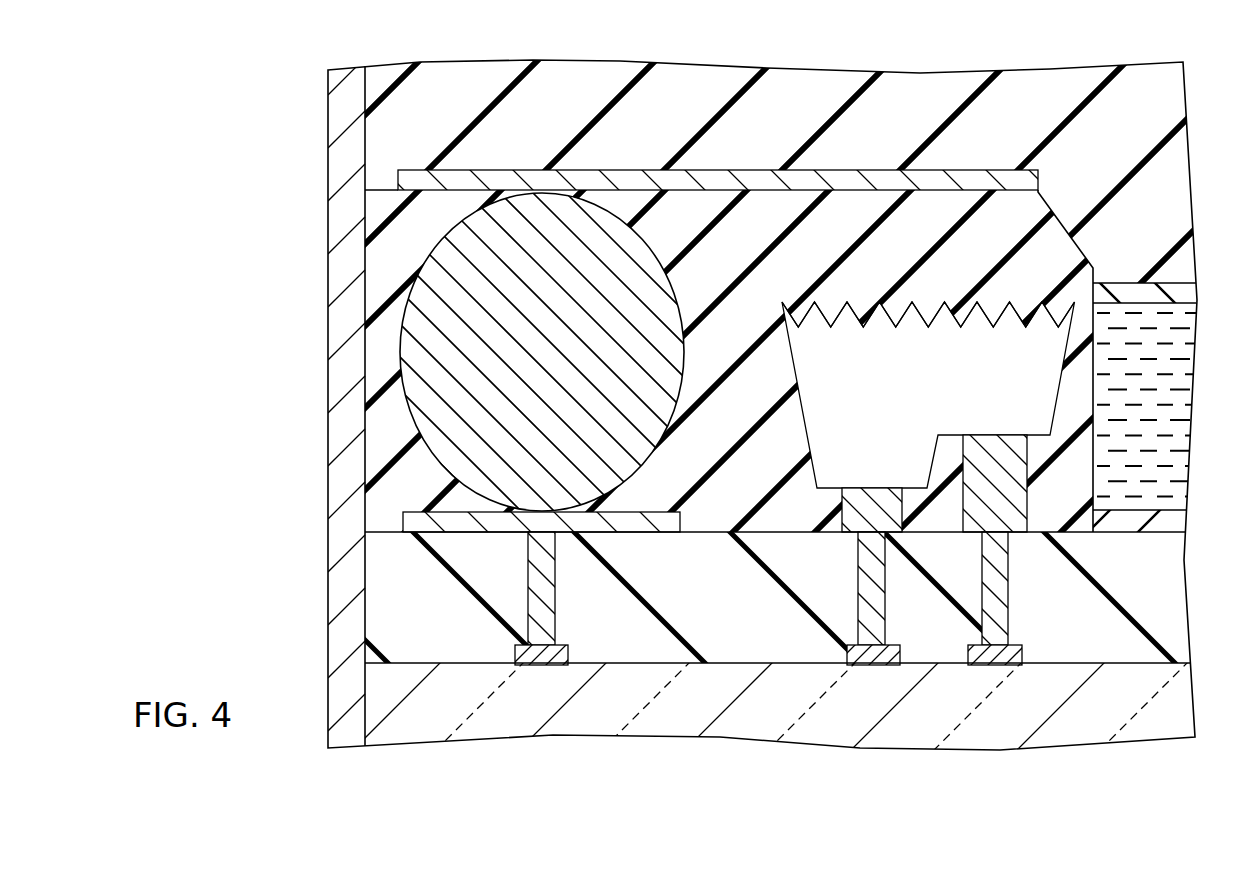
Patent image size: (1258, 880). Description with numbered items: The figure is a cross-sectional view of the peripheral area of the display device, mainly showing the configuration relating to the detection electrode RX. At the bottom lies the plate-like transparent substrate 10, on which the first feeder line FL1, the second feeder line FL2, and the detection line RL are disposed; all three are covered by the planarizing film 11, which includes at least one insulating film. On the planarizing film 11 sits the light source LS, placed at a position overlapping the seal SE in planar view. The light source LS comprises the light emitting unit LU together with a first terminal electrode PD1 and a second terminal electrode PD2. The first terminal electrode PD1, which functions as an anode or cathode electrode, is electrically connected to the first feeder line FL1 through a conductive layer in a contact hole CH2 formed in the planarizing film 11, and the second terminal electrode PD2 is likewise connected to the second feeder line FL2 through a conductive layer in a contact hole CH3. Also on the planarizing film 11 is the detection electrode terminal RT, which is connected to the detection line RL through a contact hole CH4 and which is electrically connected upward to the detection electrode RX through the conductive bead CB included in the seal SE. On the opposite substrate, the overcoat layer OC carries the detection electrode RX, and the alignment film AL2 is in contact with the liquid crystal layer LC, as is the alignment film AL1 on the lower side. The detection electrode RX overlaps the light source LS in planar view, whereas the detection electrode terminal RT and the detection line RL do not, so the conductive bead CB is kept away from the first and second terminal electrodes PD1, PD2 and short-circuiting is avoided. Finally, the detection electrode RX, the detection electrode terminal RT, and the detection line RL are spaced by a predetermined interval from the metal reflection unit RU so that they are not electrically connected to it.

The overcoat layer OC is at (1160, 97).
The detection electrode RX is at (1037, 178).
The light source LS is at (939, 296).
The conductive bead CB is at (455, 264).
The alignment film AL2 is at (1160, 288).
The reflection unit RU is at (342, 380).
The seal SE is at (1080, 386).
The light emitting unit LU is at (840, 442).
The liquid crystal layer LC is at (1165, 457).
The second terminal electrode PD2 is at (860, 505).
The first terminal electrode PD1 is at (1003, 505).
The alignment film AL1 is at (1165, 521).
The detection electrode terminal RT is at (640, 515).
The contact hole CH4 is at (522, 590).
The detection line RL is at (570, 657).
The contact hole CH3 is at (891, 590).
The contact hole CH2 is at (1015, 590).
The planarizing film 11 is at (1165, 612).
The transparent substrate 10 is at (1157, 713).
The second feeder line FL2 is at (875, 665).
The first feeder line FL1 is at (1000, 665).